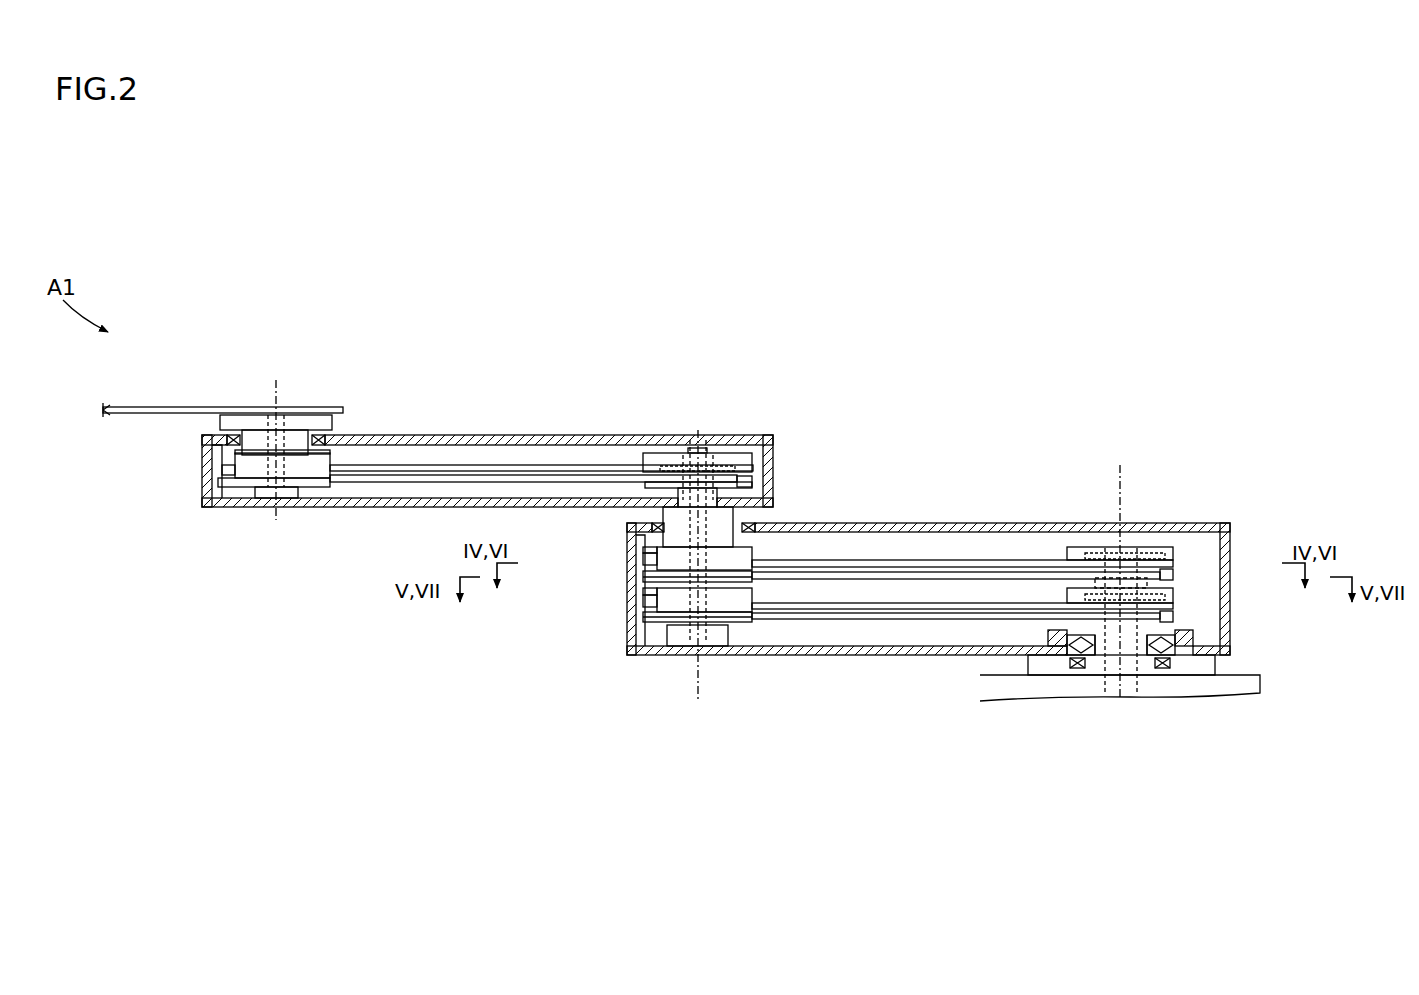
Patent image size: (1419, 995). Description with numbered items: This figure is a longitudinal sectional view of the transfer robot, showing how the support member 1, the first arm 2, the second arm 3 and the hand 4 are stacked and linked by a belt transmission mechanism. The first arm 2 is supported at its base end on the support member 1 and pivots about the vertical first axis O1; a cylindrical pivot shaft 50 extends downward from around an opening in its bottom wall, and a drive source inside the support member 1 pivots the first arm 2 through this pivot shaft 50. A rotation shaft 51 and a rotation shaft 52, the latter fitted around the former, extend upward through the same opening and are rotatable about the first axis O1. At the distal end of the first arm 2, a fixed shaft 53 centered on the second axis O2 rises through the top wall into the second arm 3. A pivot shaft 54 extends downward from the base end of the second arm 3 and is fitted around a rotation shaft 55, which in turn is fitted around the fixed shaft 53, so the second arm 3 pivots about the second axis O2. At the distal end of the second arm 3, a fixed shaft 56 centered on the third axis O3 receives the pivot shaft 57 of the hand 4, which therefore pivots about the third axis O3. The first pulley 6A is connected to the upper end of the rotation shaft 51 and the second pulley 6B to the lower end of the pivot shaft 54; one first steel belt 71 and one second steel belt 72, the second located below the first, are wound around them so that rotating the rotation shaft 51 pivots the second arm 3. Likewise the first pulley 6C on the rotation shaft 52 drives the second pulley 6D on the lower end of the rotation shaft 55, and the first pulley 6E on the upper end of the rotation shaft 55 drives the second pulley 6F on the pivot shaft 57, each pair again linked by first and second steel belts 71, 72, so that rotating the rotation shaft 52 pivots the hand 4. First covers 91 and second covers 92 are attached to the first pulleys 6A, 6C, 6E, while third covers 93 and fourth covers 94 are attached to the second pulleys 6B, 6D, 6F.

The support member 1 is at (1262, 688).
The first arm 2 is at (997, 523).
The second arm 3 is at (573, 435).
The hand 4 is at (158, 405).
The pivot shaft 50 is at (1195, 668).
The rotation shaft 51 is at (1137, 585).
The rotation shaft 52 is at (1150, 637).
The fixed shaft 53 is at (625, 598).
The pivot shaft 54 is at (663, 515).
The rotation shaft 55 is at (625, 548).
The fixed shaft 56 is at (235, 456).
The pivot shaft 57 is at (242, 438).
The first pulley 6A is at (1078, 545).
The second pulley 6B is at (754, 553).
The first pulley 6C is at (1065, 594).
The second pulley 6D is at (757, 595).
The first pulley 6E is at (666, 451).
The second pulley 6F is at (333, 463).
The first steel belts 71 is at (485, 466).
The second steel belts 72 is at (527, 476).
The first covers 91 is at (720, 463).
The second covers 92 is at (752, 480).
The third covers 93 is at (222, 470).
The fourth covers 94 is at (303, 490).
The first axis O1 is at (1122, 478).
The second axis O2 is at (698, 690).
The third axis O3 is at (280, 394).